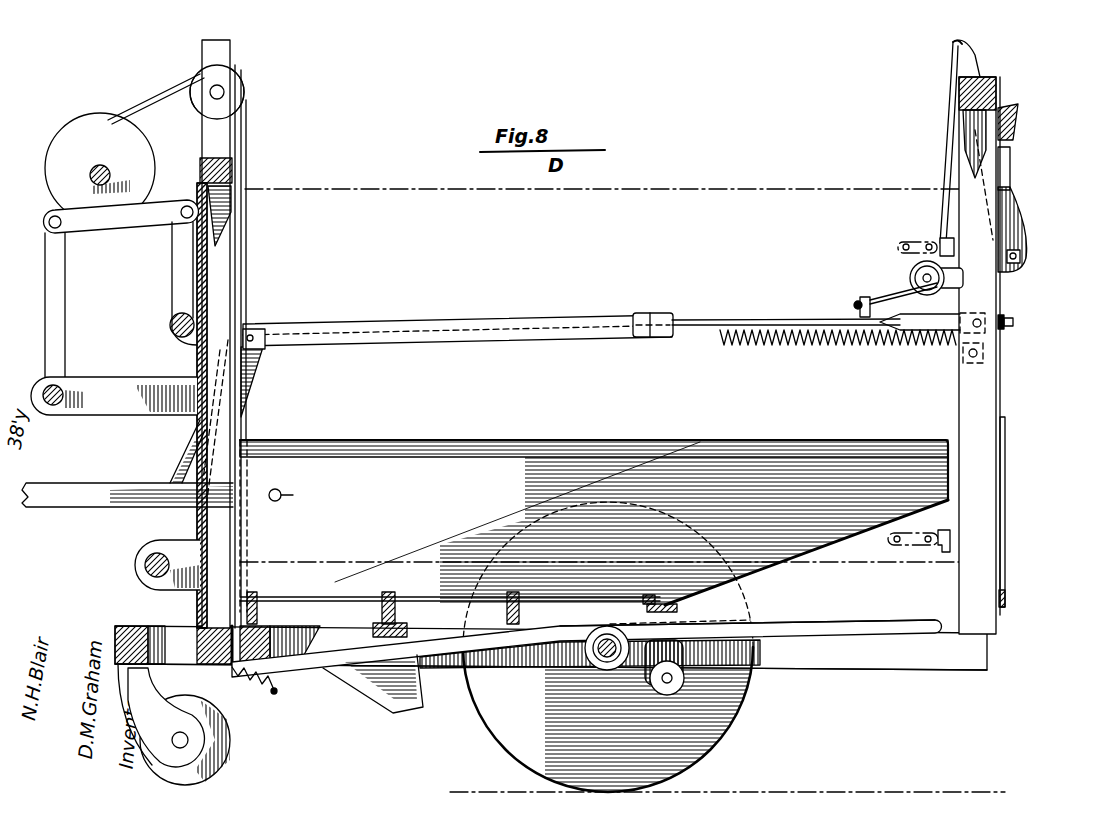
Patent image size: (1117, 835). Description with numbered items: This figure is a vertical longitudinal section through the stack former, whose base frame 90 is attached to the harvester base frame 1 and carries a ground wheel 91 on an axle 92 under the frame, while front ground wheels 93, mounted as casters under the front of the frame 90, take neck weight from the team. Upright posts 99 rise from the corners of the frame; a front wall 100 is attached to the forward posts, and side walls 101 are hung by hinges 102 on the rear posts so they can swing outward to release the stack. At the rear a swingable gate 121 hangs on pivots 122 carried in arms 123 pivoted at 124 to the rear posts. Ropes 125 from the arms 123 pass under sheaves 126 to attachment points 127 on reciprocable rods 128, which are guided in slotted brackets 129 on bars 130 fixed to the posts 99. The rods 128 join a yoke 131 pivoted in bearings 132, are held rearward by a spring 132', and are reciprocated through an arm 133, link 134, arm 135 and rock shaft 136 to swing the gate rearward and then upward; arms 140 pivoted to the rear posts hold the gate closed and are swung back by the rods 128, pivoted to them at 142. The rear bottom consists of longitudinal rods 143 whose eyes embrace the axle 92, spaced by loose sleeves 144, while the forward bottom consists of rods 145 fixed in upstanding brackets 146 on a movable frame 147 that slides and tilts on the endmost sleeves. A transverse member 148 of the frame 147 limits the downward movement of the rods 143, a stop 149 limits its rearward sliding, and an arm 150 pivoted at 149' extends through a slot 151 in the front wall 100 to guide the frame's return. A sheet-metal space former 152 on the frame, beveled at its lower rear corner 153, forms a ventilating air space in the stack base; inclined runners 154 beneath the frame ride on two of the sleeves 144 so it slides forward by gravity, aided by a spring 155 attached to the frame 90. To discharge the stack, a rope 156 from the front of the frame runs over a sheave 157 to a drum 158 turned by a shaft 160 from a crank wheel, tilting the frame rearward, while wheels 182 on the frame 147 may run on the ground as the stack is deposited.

The harvester base frame 1 is at (950, 668).
The base frame 90 is at (203, 627).
The ground wheel 91 is at (712, 727).
The axle 92 is at (596, 662).
The front ground wheel 93 is at (228, 750).
The upright post 99 is at (222, 307).
The front wall 100 is at (205, 278).
The side wall 101 is at (445, 189).
The hinge 102 is at (942, 240).
The gate 121 is at (1003, 370).
The pivot 122 is at (1020, 252).
The swingable arm 123 is at (1018, 208).
The arm pivot 124 is at (985, 97).
The rope 125 is at (947, 128).
The sheave 126 is at (912, 272).
The point of attachment 127 is at (858, 300).
The reciprocable rod 128 is at (745, 320).
The slotted bracket 129 is at (648, 314).
The bar 130 is at (470, 323).
The yoke 131 is at (178, 464).
The bearing 132 is at (143, 559).
The spring 132' is at (838, 352).
The arm 133 is at (182, 260).
The link 134 is at (130, 224).
The arm 135 is at (66, 308).
The rock shaft 136 is at (62, 390).
The arm 140 is at (1013, 322).
The pivot 142 is at (988, 320).
The longitudinal rod 143 is at (877, 630).
The loose sleeve 144 is at (604, 658).
The rod 145 is at (303, 597).
The upstanding bracket 146 is at (252, 592).
The movable frame 147 is at (322, 632).
The transverse member 148 is at (740, 665).
The stop 149 is at (380, 700).
The pivotal connection 149' is at (304, 494).
The forwardly extending arm 150 is at (73, 490).
The slot 151 is at (205, 430).
The space former 152 is at (375, 457).
The beveled corner 153 is at (815, 555).
The inclined runner 154 is at (530, 670).
The spring 155 is at (258, 695).
The rope 156 is at (170, 94).
The sheave 157 is at (236, 80).
The drum 158 is at (125, 140).
The shaft 160 is at (97, 168).
The wheel 182 is at (688, 665).